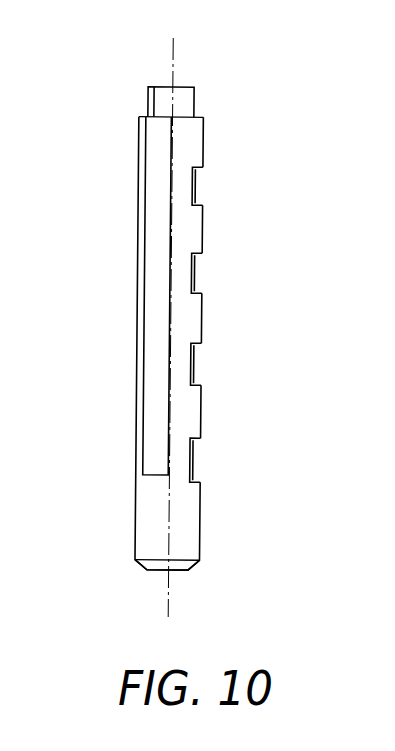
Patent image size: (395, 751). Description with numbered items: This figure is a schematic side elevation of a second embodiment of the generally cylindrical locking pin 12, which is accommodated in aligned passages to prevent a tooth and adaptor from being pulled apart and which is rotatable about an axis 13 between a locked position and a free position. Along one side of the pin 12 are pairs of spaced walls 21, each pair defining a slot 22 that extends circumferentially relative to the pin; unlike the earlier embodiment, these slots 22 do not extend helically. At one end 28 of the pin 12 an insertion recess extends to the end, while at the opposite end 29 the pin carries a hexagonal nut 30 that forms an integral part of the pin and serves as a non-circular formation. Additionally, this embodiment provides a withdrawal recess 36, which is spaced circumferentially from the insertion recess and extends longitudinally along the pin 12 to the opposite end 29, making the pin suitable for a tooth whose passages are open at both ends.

The locking pin 12 is at (162, 311).
The axis 13 is at (171, 48).
The spaced walls 21 is at (200, 170).
The slot 22 is at (198, 188).
The end of the pin 28 is at (150, 576).
The opposite end 29 is at (163, 66).
The hexagonal nut 30 is at (192, 98).
The withdrawal recess 36 is at (158, 198).